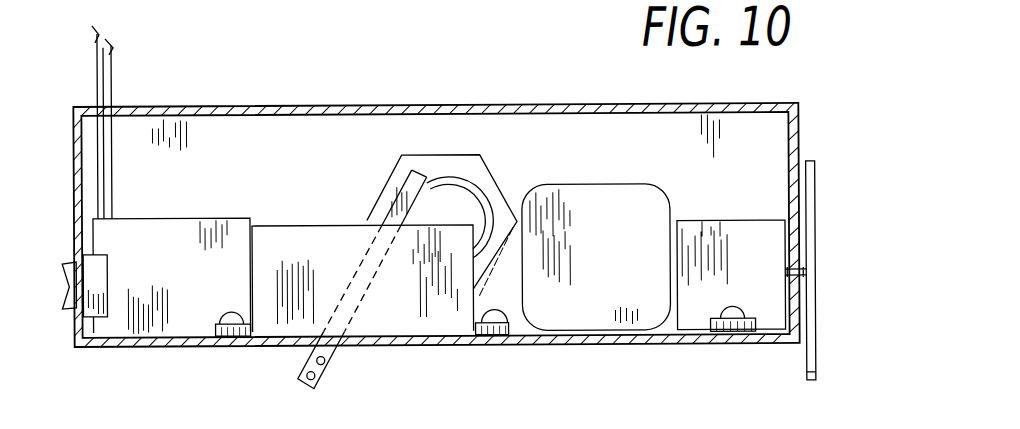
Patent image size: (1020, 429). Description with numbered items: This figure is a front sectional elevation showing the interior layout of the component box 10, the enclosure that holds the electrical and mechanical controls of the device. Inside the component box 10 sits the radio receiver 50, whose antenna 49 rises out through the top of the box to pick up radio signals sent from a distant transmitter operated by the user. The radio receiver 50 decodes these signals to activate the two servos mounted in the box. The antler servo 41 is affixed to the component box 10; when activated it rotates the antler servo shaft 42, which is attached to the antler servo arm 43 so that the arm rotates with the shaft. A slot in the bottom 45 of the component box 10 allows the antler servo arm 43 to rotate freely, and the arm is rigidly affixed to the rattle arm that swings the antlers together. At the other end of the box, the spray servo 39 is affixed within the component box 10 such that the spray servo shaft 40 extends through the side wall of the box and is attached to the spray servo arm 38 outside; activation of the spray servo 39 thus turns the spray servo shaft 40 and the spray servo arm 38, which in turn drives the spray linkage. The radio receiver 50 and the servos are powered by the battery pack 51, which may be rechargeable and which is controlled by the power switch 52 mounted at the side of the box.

The component box 10 is at (227, 105).
The antenna 49 is at (113, 77).
The radio receiver 50 is at (169, 336).
The power switch 52 is at (64, 300).
The antler servo 41 is at (327, 224).
The antler servo shaft 42 is at (363, 276).
The antler servo arm 43 is at (402, 154).
The bottom 45 is at (498, 346).
The battery pack 51 is at (590, 185).
The spray servo 39 is at (695, 322).
The spray servo shaft 40 is at (789, 262).
The spray servo arm 38 is at (815, 308).